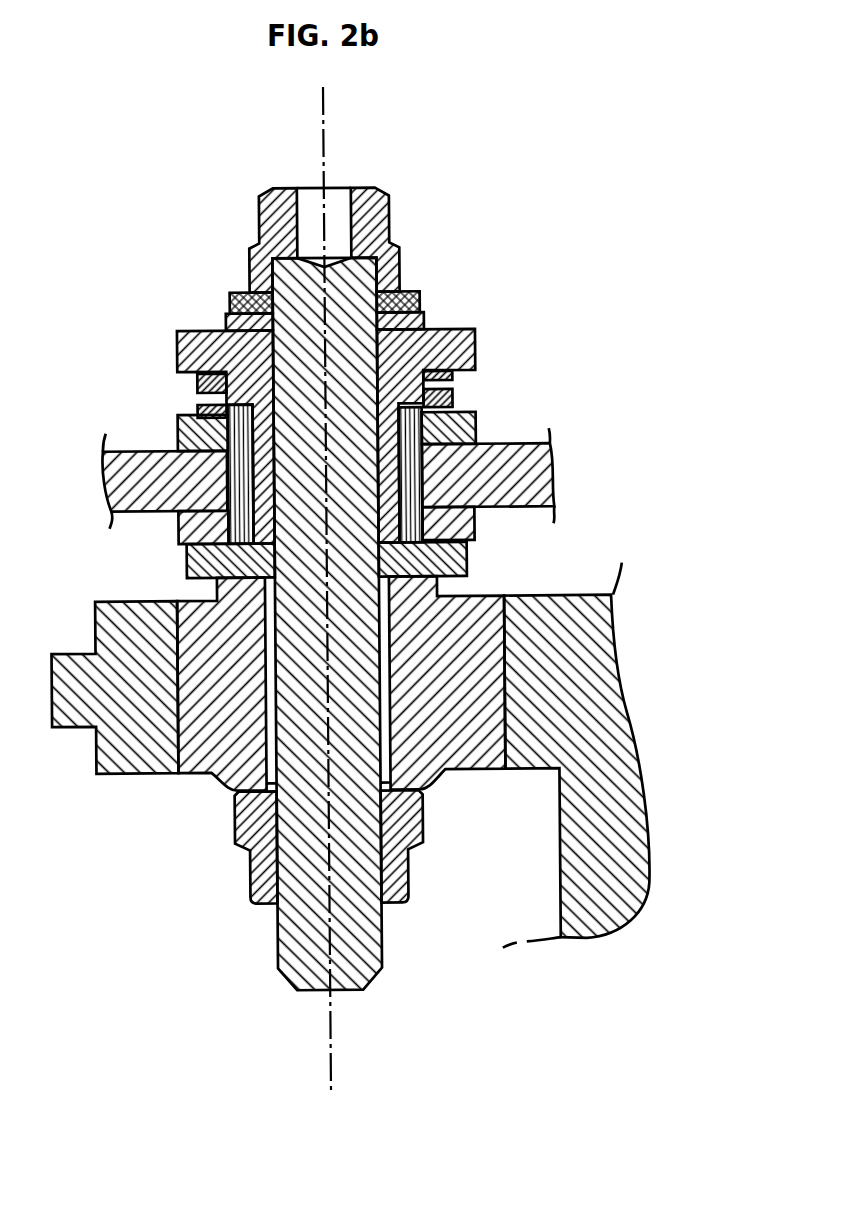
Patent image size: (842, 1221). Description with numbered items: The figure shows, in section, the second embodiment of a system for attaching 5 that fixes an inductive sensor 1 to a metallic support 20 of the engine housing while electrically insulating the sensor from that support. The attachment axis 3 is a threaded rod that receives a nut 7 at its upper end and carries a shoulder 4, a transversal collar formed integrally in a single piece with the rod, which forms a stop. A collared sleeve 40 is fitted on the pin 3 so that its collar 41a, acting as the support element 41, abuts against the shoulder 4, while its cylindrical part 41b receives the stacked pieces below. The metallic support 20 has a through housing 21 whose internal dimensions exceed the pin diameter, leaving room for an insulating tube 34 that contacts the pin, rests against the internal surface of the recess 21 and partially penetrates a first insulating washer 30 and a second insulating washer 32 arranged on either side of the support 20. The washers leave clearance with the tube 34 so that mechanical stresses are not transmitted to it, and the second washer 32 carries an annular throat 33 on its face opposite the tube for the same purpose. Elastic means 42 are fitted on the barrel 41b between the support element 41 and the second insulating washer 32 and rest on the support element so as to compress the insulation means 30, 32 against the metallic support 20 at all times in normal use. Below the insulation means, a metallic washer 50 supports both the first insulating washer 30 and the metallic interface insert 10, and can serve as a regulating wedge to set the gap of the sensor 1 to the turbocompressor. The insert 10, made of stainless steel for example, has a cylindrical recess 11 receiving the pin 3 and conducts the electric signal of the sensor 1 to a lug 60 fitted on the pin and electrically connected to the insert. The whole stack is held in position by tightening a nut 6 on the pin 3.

The sensor 1 is at (569, 612).
The attachment axis 3 is at (354, 941).
The shoulder 4 is at (226, 321).
The system for attaching 5 is at (670, 372).
The nut 6 is at (388, 869).
The nut 7 is at (261, 270).
The interface insert 10 is at (202, 755).
The recess 11 is at (265, 695).
The metallic support 20 is at (518, 495).
The through housing 21 is at (224, 475).
The first insulating washer 30 is at (184, 526).
The second insulating washer 32 is at (481, 427).
The annular throat 33 is at (400, 411).
The insulating tube 34 is at (403, 484).
The collared sleeve 40 is at (429, 571).
The support element 41 is at (445, 329).
The collar 41a is at (175, 348).
The cylindrical part 41b is at (259, 428).
The elastic means 42 is at (459, 394).
The metallic washer 50 is at (191, 562).
The lug 60 is at (410, 299).